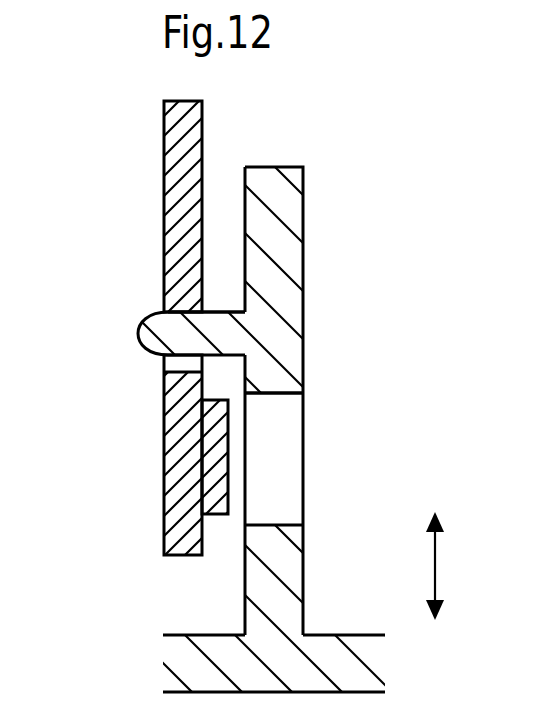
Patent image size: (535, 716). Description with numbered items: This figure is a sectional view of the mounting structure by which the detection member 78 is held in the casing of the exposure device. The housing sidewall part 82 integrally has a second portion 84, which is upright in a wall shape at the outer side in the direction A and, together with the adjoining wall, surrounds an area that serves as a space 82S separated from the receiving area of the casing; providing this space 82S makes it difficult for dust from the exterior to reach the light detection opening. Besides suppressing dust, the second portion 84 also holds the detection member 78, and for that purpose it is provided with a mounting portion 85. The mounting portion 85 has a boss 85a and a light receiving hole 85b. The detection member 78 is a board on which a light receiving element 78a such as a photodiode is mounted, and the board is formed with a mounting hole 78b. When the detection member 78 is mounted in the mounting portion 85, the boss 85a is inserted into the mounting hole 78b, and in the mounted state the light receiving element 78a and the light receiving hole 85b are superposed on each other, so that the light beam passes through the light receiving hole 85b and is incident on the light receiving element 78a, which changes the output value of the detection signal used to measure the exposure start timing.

The detection member 78 is at (166, 162).
The light receiving element 78a is at (220, 515).
The mounting hole 78b is at (172, 362).
The second portion 84 is at (287, 185).
The housing sidewall part 82 is at (254, 400).
The space 82S is at (412, 481).
The mounting portion 85 is at (312, 296).
The boss 85a is at (221, 318).
The light receiving hole 85b is at (273, 393).
The direction A is at (449, 566).